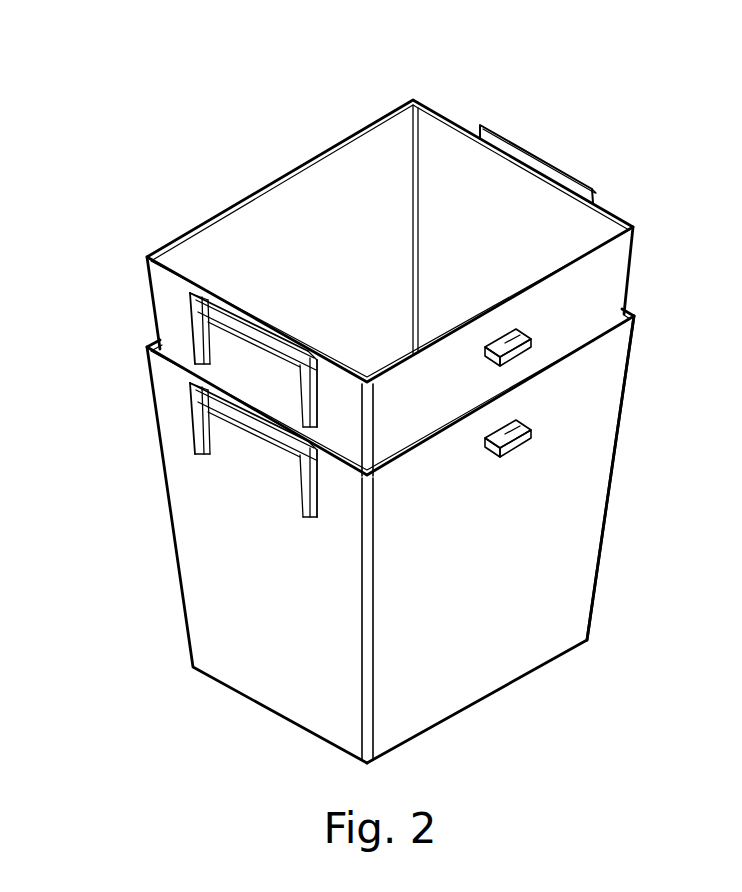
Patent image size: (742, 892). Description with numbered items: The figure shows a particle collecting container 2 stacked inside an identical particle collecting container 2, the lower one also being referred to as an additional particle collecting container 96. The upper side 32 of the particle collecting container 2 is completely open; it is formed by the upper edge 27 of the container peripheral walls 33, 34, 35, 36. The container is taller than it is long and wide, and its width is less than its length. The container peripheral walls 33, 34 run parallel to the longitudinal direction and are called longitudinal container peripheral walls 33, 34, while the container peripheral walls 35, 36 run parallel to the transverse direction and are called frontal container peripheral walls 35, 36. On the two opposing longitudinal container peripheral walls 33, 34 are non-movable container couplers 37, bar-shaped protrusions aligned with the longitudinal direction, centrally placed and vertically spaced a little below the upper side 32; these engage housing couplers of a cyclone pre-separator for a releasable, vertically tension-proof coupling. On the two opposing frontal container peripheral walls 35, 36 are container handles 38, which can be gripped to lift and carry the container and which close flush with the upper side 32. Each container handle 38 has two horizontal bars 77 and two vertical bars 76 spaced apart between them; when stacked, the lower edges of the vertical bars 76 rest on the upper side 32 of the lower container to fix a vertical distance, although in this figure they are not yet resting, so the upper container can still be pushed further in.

The particle collecting container 2 is at (160, 293).
The additional particle collecting container 96 is at (138, 597).
The upper edge 27 is at (376, 118).
The upper side 32 is at (282, 149).
The longitudinal container peripheral wall 33 is at (488, 652).
The longitudinal container peripheral wall 34 is at (144, 437).
The frontal container peripheral wall 35 is at (243, 678).
The frontal container peripheral wall 36 is at (624, 528).
The container coupler 37 is at (530, 345).
The container handle 38 is at (555, 172).
The vertical bar 76 is at (195, 457).
The horizontal bar 77 is at (283, 457).